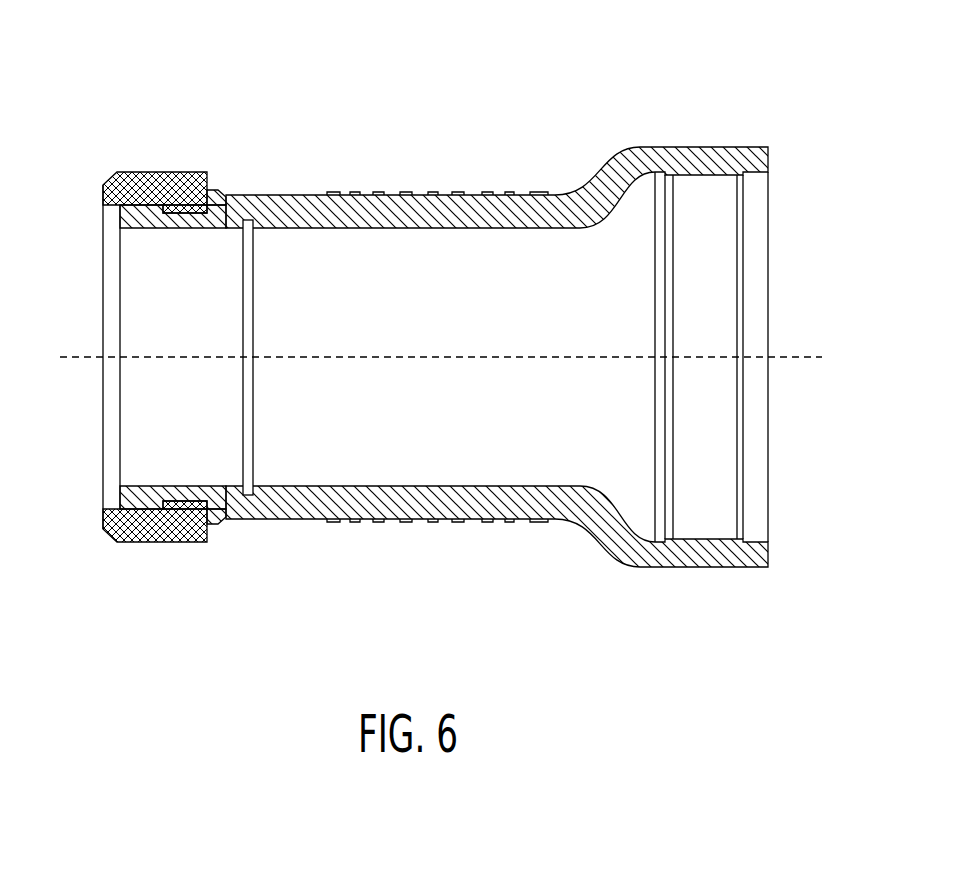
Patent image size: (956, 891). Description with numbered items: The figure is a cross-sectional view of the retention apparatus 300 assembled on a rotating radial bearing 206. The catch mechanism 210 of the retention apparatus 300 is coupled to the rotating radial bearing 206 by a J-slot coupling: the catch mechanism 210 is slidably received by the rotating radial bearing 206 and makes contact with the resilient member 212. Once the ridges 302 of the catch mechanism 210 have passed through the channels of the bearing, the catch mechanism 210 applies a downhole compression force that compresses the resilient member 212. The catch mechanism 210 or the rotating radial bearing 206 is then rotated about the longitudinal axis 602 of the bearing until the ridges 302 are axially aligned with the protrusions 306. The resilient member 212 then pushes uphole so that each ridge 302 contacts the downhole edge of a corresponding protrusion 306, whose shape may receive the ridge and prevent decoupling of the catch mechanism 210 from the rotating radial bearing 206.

The retention apparatus 300 is at (530, 89).
The rotating radial bearing 206 is at (421, 194).
The catch mechanism 210 is at (107, 184).
The resilient member 212 is at (215, 192).
The ridges 302 is at (185, 213).
The protrusions 306 is at (140, 215).
The longitudinal axis 602 is at (795, 355).